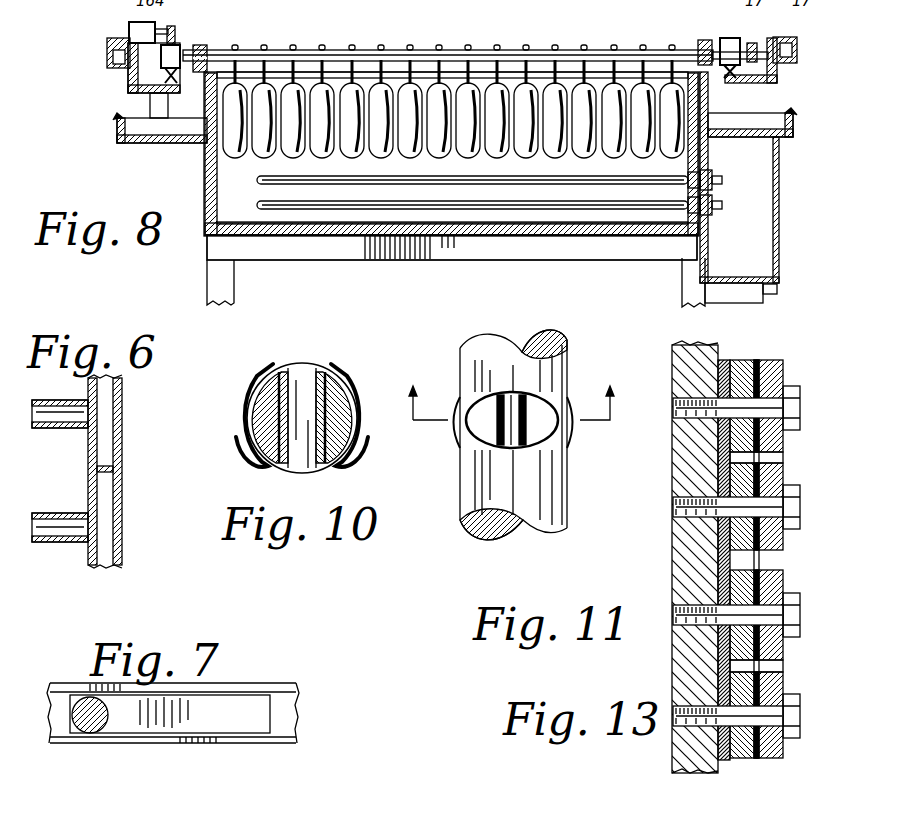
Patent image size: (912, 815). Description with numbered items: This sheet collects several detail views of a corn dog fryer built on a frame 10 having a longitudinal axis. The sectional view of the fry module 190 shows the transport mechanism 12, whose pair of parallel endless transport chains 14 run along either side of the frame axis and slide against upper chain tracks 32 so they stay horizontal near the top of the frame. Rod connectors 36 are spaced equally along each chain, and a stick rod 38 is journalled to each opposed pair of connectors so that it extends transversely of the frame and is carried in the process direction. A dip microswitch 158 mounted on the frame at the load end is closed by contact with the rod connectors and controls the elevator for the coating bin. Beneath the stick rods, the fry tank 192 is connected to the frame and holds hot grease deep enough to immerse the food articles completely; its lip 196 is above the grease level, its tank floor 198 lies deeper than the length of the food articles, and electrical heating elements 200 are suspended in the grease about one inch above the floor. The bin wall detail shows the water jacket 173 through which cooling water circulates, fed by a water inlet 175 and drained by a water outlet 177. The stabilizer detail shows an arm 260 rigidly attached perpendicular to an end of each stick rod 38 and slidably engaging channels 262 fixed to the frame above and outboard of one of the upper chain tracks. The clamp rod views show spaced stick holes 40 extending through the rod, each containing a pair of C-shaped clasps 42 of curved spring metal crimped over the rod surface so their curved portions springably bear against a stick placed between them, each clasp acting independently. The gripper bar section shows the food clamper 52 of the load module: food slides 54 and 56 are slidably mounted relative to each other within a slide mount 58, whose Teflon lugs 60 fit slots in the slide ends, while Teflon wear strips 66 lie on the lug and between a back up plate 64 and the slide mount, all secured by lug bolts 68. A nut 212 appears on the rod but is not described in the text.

In FIG. 8, the frame 10 is at (107, 55).
In FIG. 11, the frame 10 is at (509, 394).
In FIG. 8, the transport mechanism 12 is at (726, 37).
In FIG. 8, the transport chains 14 is at (138, 75).
In FIG. 8, the upper chain tracks 32 is at (773, 84).
In FIG. 8, the rod connectors 36 is at (178, 47).
In FIG. 8, the stick rod 38 is at (356, 50).
In FIG. 10, the stick rod 38 is at (352, 395).
In FIG. 11, the stick rod 38 is at (567, 490).
In FIG. 7, the stick rod 38 is at (72, 700).
In FIG. 10, the stick holes 40 is at (300, 365).
In FIG. 11, the stick holes 40 is at (512, 392).
In FIG. 10, the clasps 42 is at (275, 365).
In FIG. 11, the clasps 42 is at (458, 440).
In FIG. 13, the food clamper 52 is at (760, 351).
In FIG. 13, the food slide 54 is at (760, 372).
In FIG. 13, the food slide 56 is at (740, 458).
In FIG. 13, the slide mount 58 is at (672, 352).
In FIG. 13, the lugs 60 is at (785, 545).
In FIG. 13, the back up plate 64 is at (784, 385).
In FIG. 13, the wear strips 66 is at (762, 460).
In FIG. 13, the lug bolts 68 is at (800, 405).
In FIG. 8, the dip microswitch 158 is at (130, 26).
In FIG. 6, the water jacket 173 is at (118, 490).
In FIG. 6, the water inlet 175 is at (78, 430).
In FIG. 6, the water outlet 177 is at (68, 513).
In FIG. 8, the fry module 190 is at (202, 166).
In FIG. 8, the fry tank 192 is at (206, 232).
In FIG. 8, the lip 196 is at (706, 86).
In FIG. 8, the tank floor 198 is at (468, 216).
In FIG. 8, the electrical heating elements 200 is at (256, 204).
In FIG. 8, the nut 212 is at (207, 48).
In FIG. 7, the stabilizer arm 260 is at (240, 695).
In FIG. 8, the channels 262 is at (752, 43).
In FIG. 7, the channels 262 is at (297, 690).